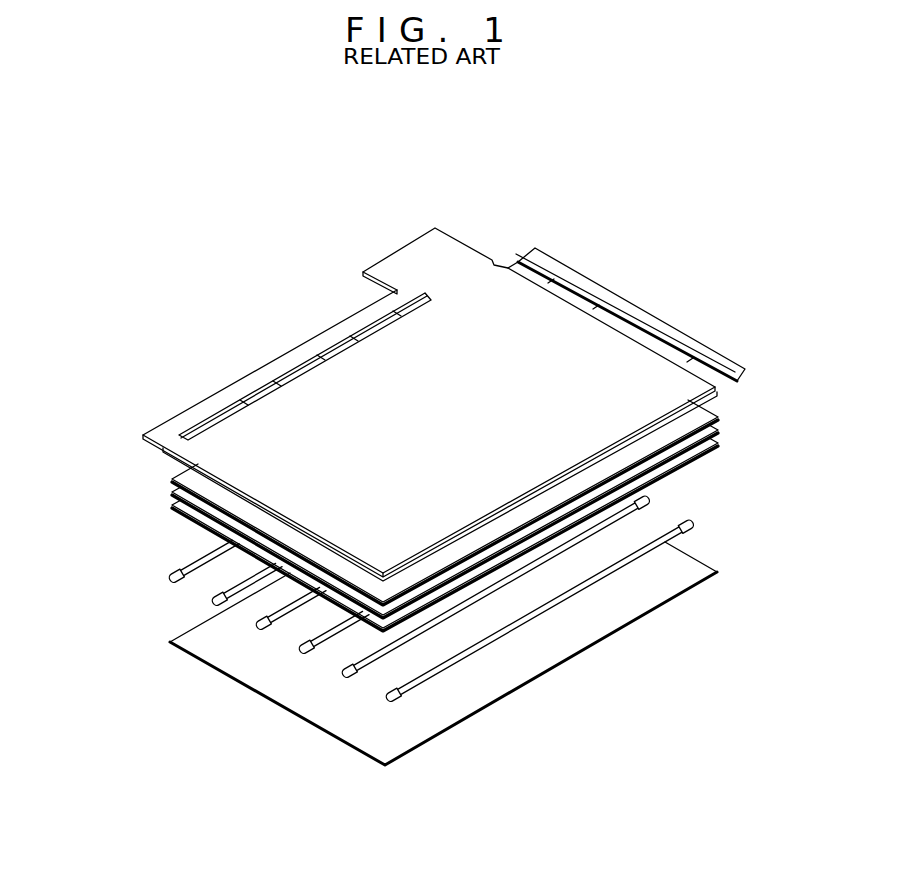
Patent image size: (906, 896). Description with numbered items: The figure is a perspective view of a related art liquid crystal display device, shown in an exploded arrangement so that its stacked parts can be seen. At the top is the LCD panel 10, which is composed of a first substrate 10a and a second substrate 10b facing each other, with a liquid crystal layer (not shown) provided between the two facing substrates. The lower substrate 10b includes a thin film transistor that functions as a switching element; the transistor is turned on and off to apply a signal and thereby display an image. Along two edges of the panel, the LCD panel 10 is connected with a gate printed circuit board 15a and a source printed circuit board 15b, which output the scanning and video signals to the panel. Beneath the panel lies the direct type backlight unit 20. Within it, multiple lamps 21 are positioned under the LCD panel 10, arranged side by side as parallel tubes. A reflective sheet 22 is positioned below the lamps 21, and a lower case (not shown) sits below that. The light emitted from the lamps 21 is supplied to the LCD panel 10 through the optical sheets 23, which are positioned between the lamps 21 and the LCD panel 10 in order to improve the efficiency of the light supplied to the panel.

The LCD panel 10 is at (72, 432).
The first substrate 10a is at (147, 441).
The second substrate 10b is at (189, 468).
The gate printed circuit board 15a is at (633, 311).
The source printed circuit board 15b is at (407, 257).
The backlight unit 20 is at (778, 416).
The lamps 21 is at (647, 550).
The reflective sheet 22 is at (683, 560).
The optical sheets 23 is at (731, 413).